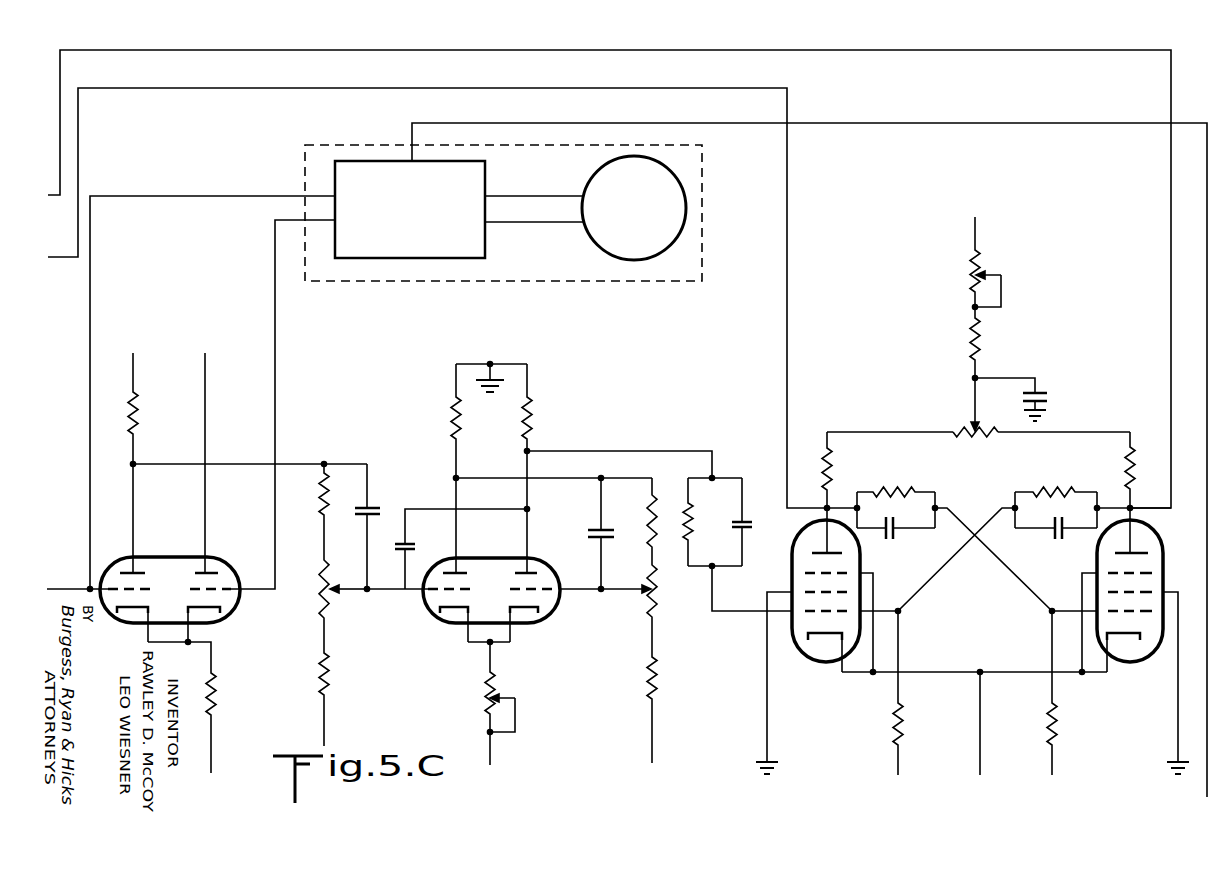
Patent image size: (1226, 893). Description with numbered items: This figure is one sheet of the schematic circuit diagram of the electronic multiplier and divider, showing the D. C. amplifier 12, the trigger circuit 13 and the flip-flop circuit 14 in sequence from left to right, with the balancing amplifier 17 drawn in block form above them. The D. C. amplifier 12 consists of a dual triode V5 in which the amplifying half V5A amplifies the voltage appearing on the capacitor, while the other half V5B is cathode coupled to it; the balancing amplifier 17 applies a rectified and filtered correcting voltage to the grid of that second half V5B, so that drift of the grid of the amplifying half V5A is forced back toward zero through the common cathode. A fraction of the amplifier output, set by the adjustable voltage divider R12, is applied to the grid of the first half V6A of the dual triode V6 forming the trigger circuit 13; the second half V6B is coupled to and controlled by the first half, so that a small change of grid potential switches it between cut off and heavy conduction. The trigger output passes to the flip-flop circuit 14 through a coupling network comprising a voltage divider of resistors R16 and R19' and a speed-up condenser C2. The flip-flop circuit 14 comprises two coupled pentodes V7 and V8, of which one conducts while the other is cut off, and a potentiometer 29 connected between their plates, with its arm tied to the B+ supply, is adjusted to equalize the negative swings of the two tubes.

The D. C. amplifier 12 is at (262, 565).
The trigger circuit 13 is at (593, 568).
The flip-flop circuit 14 is at (977, 498).
The balancing amplifier 17 is at (683, 280).
The potentiometer 29 is at (969, 442).
The adjustable voltage divider R12 is at (324, 598).
The resistor R16 is at (713, 522).
The speed-up condenser C2 is at (742, 494).
The resistor R19' is at (913, 706).
The dual triode V5 is at (183, 666).
The amplifying half V5A is at (105, 619).
The second half V5B is at (229, 615).
The dual triode V6 is at (493, 652).
The first half V6A is at (447, 613).
The second half V6B is at (535, 613).
The pentode V7 is at (816, 663).
The pentode V8 is at (1136, 663).